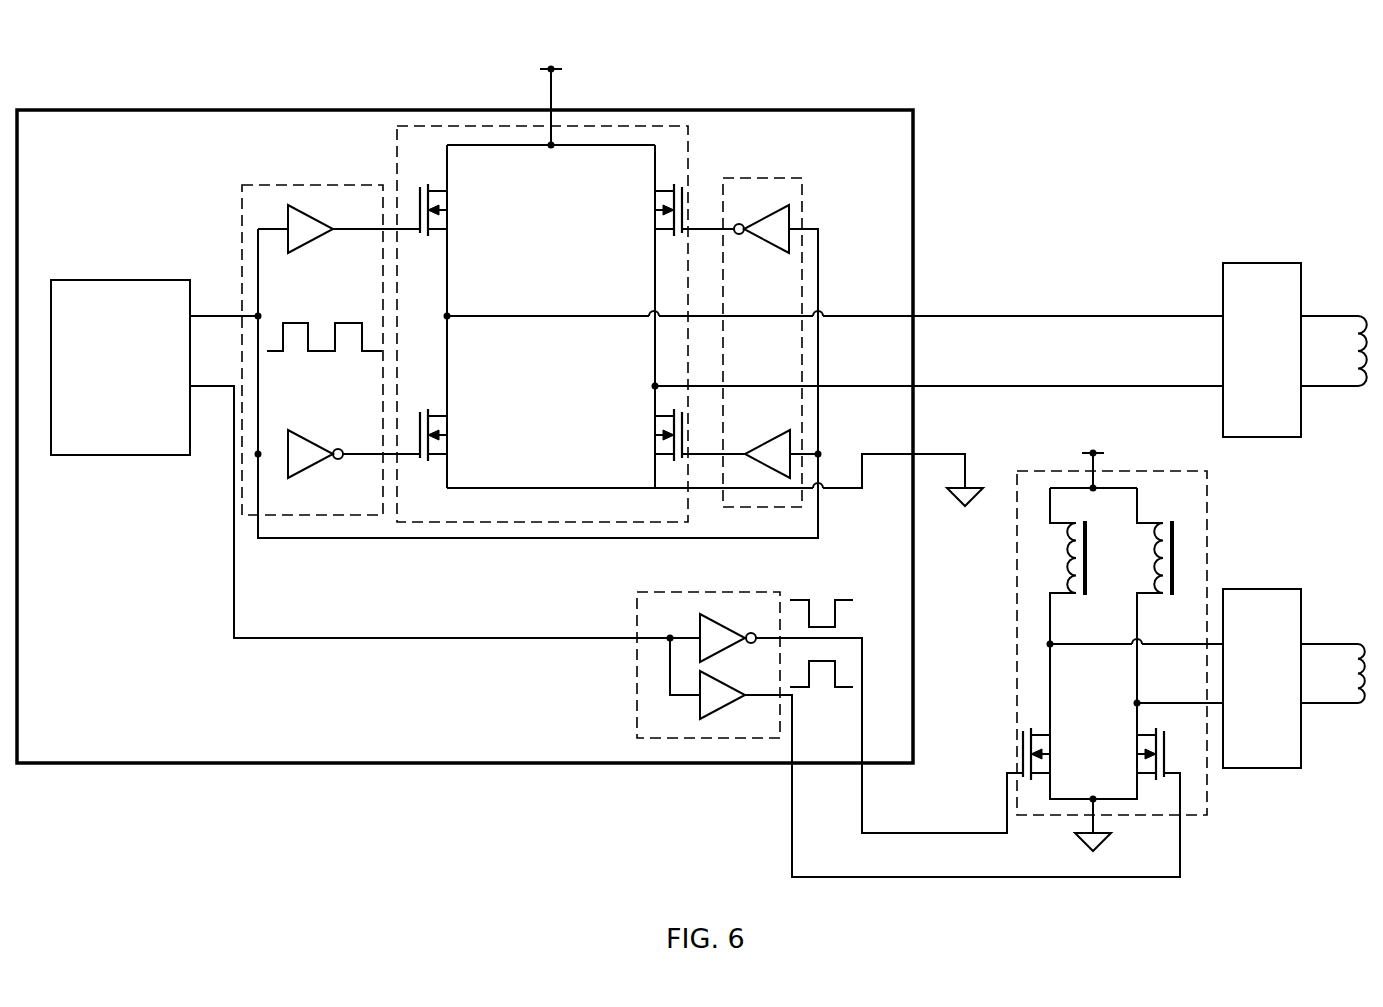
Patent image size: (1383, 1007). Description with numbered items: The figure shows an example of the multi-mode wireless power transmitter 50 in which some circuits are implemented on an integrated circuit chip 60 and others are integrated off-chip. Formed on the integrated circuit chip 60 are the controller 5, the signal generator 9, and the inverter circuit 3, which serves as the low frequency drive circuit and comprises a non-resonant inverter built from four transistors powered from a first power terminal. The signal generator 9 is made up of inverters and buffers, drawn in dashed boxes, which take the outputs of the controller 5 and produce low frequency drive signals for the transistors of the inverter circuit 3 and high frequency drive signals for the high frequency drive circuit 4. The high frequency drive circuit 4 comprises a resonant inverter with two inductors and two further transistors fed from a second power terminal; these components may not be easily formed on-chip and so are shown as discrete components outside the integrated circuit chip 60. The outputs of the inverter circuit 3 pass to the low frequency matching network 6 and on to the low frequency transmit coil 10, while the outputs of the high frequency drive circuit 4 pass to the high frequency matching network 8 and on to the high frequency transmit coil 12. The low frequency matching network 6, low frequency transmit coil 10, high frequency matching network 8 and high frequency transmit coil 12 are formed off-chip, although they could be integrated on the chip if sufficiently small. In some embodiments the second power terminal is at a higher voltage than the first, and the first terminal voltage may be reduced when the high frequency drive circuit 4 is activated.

The multi-mode wireless power transmitter 50 is at (131, 67).
The integrated circuit chip 60 is at (841, 109).
The controller 5 is at (142, 279).
The signal generator 9 is at (339, 184).
The inverter circuit 3 is at (448, 125).
The high frequency drive circuit 4 is at (1171, 470).
The low frequency matching network 6 is at (1266, 262).
The low frequency transmit coil 10 is at (1358, 315).
The high frequency matching network 8 is at (1266, 588).
The high frequency transmit coil 12 is at (1358, 643).